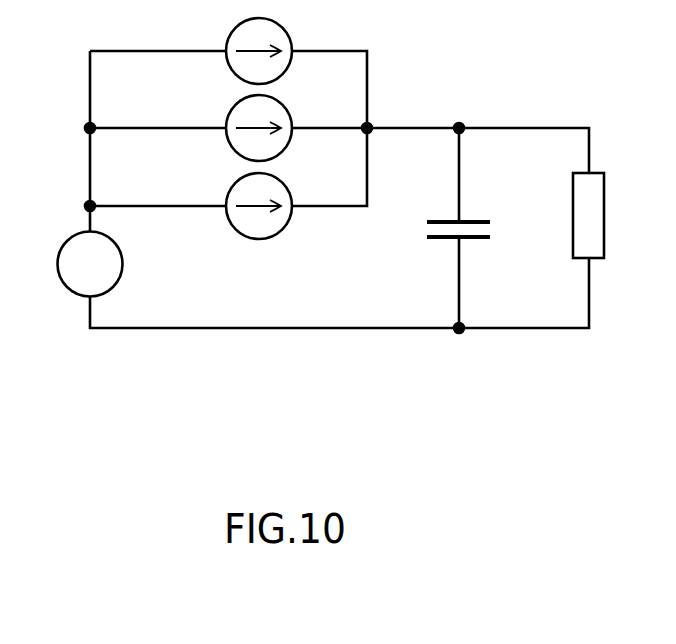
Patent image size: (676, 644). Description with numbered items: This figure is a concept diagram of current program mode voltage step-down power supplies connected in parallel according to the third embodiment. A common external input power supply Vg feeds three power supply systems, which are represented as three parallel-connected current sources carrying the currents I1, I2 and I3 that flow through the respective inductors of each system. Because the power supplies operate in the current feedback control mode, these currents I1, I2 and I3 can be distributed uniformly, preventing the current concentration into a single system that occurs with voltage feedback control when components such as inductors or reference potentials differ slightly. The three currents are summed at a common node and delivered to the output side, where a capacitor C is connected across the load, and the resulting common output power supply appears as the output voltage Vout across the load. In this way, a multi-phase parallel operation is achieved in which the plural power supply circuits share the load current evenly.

The current I1 is at (234, 59).
The current I2 is at (234, 137).
The current I3 is at (234, 213).
The external input power supply Vg is at (74, 276).
The capacitor C is at (440, 228).
The output voltage across load resistor Vout is at (541, 200).